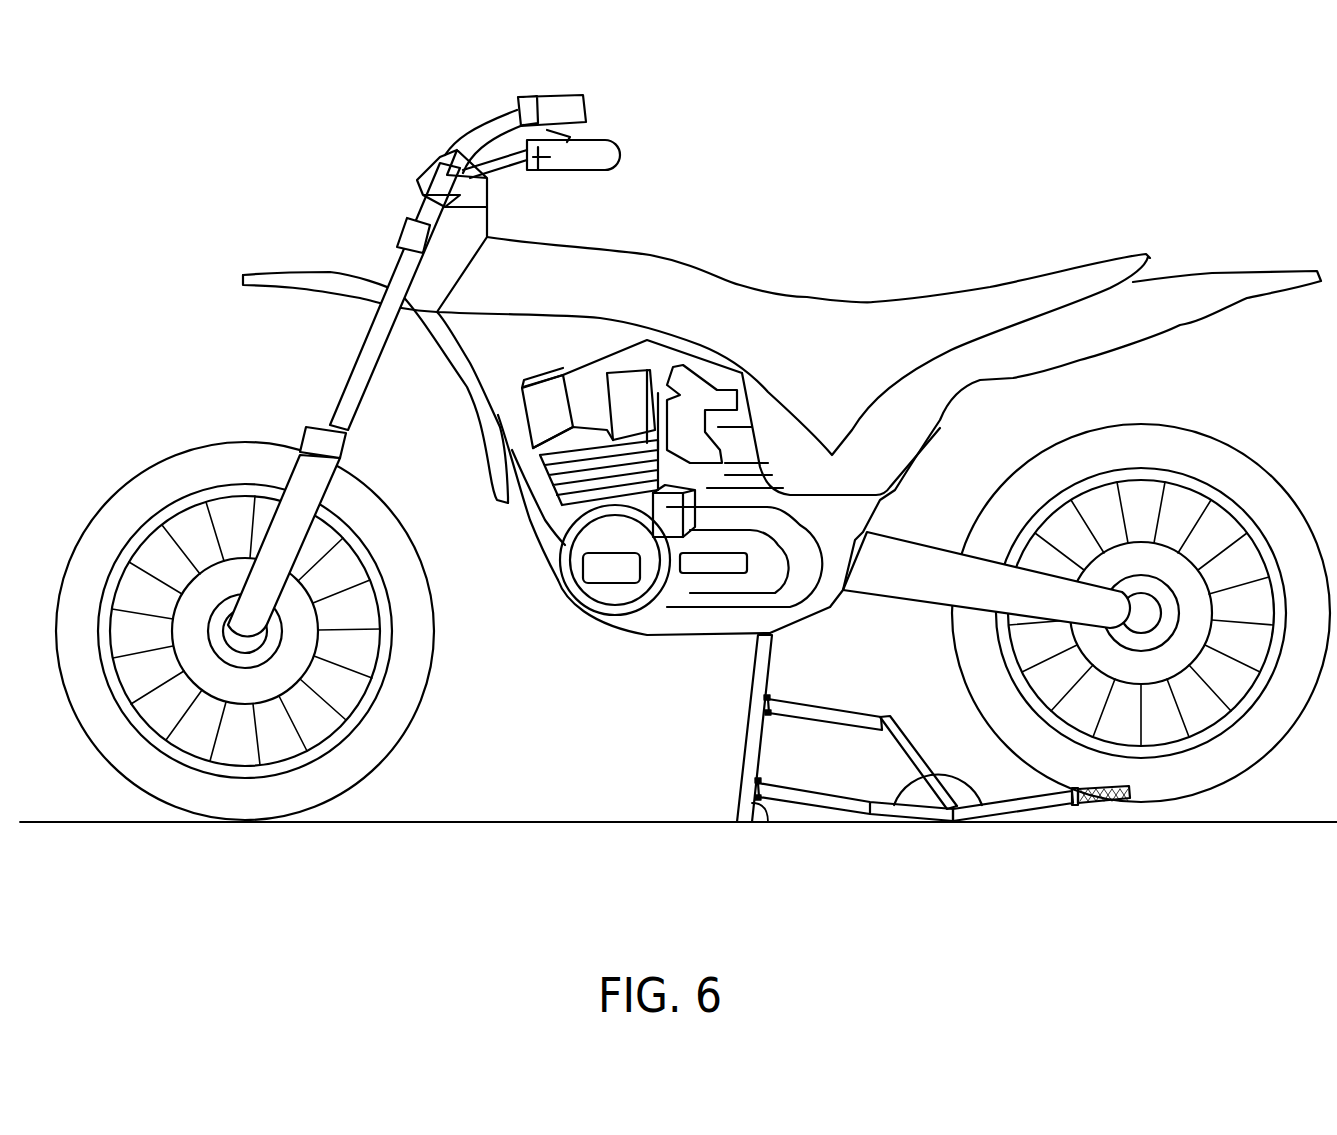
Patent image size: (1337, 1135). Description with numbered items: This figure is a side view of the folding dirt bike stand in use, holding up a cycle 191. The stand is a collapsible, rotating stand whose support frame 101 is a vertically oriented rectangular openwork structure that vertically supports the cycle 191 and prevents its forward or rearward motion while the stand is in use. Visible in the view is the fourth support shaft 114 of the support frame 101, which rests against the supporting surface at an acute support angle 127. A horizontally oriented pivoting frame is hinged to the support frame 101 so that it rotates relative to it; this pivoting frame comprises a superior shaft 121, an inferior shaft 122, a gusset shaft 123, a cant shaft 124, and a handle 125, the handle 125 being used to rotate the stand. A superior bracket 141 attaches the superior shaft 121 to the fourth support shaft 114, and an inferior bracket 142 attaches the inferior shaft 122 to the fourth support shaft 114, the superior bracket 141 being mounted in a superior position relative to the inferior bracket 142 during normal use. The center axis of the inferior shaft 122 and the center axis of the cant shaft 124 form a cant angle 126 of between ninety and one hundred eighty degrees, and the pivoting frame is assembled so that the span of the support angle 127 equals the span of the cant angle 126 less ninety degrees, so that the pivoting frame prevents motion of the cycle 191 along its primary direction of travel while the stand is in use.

The support frame 101 is at (750, 647).
The cycle 191 is at (827, 330).
The fourth support shaft 114 is at (752, 735).
The superior shaft 121 is at (807, 712).
The inferior shaft 122 is at (880, 810).
The gusset shaft 123 is at (895, 730).
The cant shaft 124 is at (1005, 810).
The handle 125 is at (1090, 800).
The cant angle 126 is at (947, 775).
The support angle 127 is at (788, 812).
The superior bracket 141 is at (763, 697).
The inferior bracket 142 is at (752, 773).